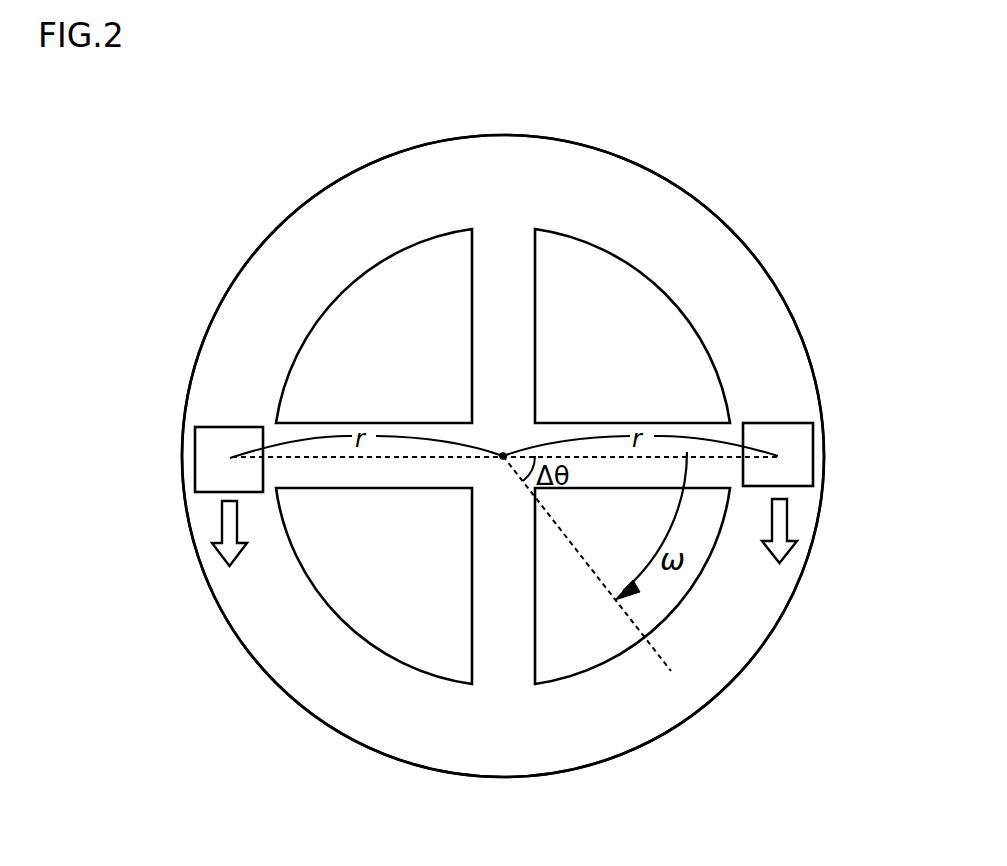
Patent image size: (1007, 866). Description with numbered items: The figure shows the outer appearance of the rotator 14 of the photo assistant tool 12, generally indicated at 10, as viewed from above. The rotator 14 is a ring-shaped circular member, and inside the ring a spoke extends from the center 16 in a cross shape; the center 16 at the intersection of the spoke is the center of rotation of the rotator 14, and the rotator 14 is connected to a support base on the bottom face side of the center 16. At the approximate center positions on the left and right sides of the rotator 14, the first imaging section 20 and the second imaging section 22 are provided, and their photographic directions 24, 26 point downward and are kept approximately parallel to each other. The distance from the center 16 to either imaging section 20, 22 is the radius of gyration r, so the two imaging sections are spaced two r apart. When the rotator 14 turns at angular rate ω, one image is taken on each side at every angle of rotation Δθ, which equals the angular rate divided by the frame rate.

The rotating body 10 is at (758, 126).
The photo assistant tool 12 is at (327, 730).
The rotator 14 is at (742, 638).
The center 16 is at (503, 456).
The first imaging section 20 is at (229, 440).
The second imaging section 22 is at (779, 435).
The photographic direction 24 is at (229, 524).
The photographic direction 26 is at (782, 520).